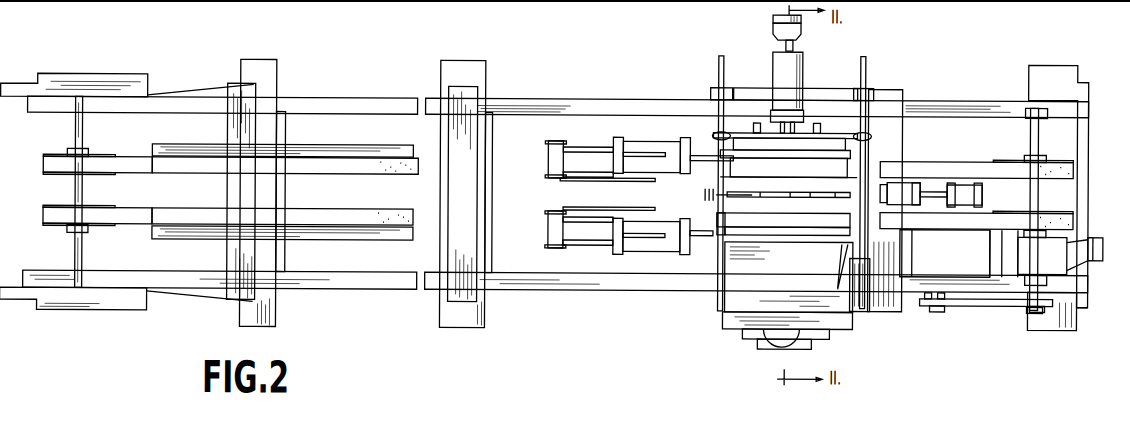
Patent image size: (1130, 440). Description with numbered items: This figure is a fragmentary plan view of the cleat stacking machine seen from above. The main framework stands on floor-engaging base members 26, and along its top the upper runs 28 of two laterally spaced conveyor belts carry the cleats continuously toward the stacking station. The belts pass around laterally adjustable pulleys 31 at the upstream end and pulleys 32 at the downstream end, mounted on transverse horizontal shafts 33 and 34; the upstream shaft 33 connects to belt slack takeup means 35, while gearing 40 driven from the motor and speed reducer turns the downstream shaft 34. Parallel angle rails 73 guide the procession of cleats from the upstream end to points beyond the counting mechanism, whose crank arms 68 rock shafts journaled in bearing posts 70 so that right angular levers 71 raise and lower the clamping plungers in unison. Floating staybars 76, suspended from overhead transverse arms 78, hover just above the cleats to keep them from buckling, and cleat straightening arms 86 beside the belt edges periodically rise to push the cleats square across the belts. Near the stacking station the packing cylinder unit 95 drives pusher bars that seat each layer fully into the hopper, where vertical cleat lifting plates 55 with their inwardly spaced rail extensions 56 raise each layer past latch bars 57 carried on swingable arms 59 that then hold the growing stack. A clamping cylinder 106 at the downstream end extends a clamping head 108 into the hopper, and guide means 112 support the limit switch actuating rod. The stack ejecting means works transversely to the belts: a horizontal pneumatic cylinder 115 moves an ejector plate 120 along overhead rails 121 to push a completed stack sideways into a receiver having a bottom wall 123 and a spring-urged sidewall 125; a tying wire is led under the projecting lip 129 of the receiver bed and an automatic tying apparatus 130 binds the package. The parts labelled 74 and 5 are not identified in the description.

The support block 5 is at (877, 146).
The floor-engaging base members 26 is at (279, 72).
The top runs of conveyor belts 28 is at (376, 166).
The upstream pulleys 31 is at (50, 178).
The downstream pulleys 32 is at (1053, 176).
The upstream shaft 33 is at (78, 141).
The downstream pulley shaft 34 is at (1030, 138).
The belt slack takeup means 35 is at (90, 75).
The gearing 40 is at (977, 306).
The cleat lifting plates 55 is at (832, 156).
The rail extensions 56 is at (693, 207).
The latch bars 57 is at (718, 140).
The vertically swingable arms 59 is at (716, 100).
The crank arms 68 is at (560, 140).
The bearing posts 70 is at (548, 146).
The right angular levers 71 is at (583, 204).
The angle rails 73 is at (368, 147).
The bar 74 is at (646, 206).
The staybars 76 is at (641, 212).
The overhead transverse arms 78 is at (617, 137).
The cleat straightening arms 86 is at (653, 150).
The power cylinder unit 95 is at (963, 181).
The pneumatic clamping cylinder 106 is at (907, 181).
The cleat stack clamping head 108 is at (870, 200).
The guide means 112 is at (806, 196).
The transverse horizontal pneumatic power cylinder 115 is at (772, 32).
The ejector plate 120 is at (790, 125).
The overhead rails 121 is at (718, 65).
The bottom wall 123 is at (742, 298).
The spring-urged sidewall 125 is at (838, 287).
The projecting lip 129 is at (782, 346).
The automatic tying apparatus 130 is at (768, 345).